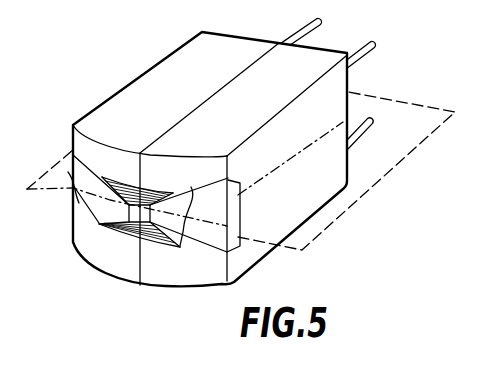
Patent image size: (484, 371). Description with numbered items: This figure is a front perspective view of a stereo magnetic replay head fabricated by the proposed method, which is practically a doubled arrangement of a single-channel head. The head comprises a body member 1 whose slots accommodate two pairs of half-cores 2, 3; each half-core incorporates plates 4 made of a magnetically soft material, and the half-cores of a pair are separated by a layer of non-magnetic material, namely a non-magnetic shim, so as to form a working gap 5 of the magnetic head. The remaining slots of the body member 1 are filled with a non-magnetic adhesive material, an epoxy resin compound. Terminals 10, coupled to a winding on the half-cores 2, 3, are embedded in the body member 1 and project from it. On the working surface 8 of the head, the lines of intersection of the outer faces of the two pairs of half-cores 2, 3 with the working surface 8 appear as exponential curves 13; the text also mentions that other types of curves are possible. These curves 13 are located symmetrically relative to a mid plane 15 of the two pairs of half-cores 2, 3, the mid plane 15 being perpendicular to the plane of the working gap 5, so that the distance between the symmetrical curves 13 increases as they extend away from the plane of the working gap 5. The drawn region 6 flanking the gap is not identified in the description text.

The body member 1 is at (141, 272).
The half-core 2 is at (115, 229).
The half-core 3 is at (162, 239).
The plates 4 is at (128, 232).
The working gap 5 is at (140, 238).
The flank web 6 is at (82, 210).
The working surface 8 is at (80, 137).
The terminals 10 is at (373, 121).
The exponential curves 13 is at (68, 172).
The mid plane 15 is at (321, 218).